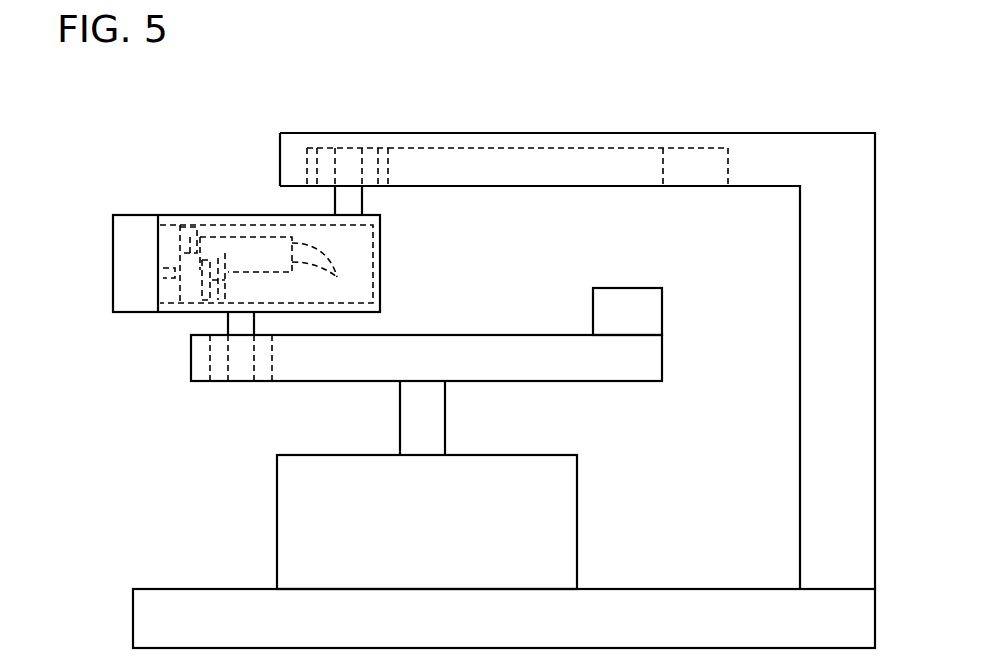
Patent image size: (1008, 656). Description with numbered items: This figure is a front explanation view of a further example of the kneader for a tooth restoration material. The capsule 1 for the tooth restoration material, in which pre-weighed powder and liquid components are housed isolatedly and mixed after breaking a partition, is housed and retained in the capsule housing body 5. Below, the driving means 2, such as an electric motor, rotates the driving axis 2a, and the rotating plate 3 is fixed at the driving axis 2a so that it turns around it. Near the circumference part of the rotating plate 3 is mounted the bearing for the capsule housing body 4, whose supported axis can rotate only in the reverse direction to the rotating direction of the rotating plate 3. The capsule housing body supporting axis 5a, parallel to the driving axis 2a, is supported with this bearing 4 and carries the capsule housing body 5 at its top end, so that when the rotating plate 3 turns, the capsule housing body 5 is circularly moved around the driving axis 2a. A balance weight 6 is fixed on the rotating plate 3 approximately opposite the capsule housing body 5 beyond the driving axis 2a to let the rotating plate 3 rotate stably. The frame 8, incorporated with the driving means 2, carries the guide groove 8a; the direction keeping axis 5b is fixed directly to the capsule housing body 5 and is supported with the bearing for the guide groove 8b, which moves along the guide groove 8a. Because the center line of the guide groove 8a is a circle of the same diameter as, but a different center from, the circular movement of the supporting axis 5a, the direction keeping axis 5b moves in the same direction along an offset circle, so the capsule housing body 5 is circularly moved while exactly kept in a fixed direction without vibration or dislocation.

The capsule for a tooth restoration material 1 is at (238, 246).
The driving means 2 is at (300, 520).
The driving axis 2a is at (417, 420).
The rotating plate 3 is at (595, 372).
The bearing for a capsule housing body 4 is at (263, 370).
The capsule housing body 5 is at (133, 265).
The capsule housing body supporting axis 5a is at (240, 372).
The direction keeping axis 5b is at (347, 160).
The balance weight 6 is at (638, 310).
The frame 8 is at (817, 165).
The guide groove 8a is at (695, 158).
The bearing for a guide groove 8b is at (372, 170).